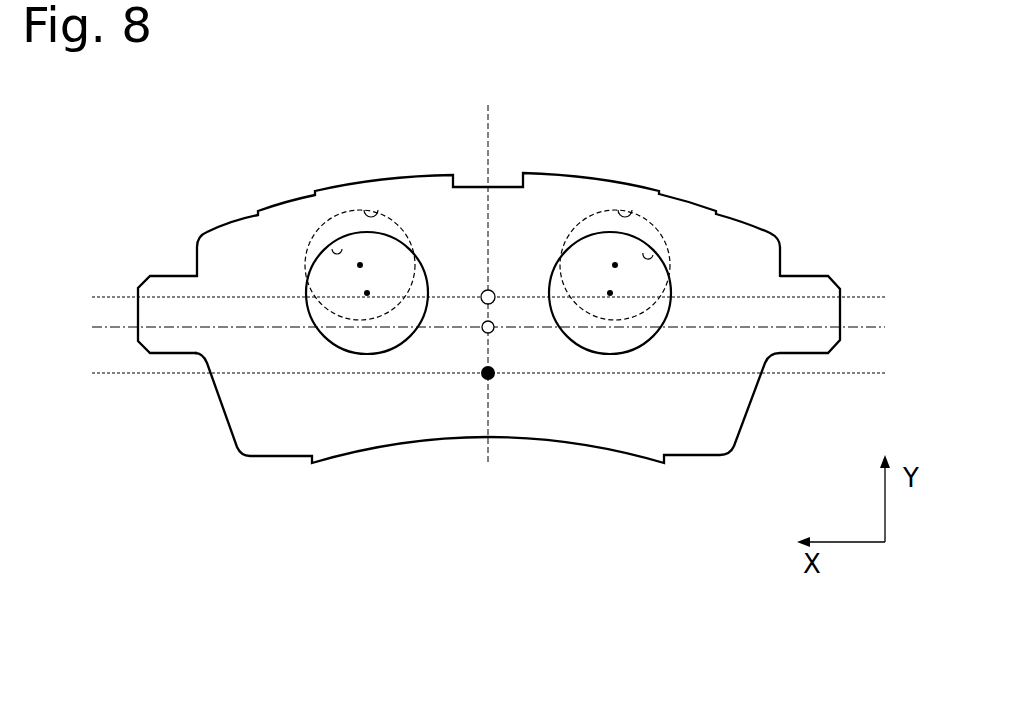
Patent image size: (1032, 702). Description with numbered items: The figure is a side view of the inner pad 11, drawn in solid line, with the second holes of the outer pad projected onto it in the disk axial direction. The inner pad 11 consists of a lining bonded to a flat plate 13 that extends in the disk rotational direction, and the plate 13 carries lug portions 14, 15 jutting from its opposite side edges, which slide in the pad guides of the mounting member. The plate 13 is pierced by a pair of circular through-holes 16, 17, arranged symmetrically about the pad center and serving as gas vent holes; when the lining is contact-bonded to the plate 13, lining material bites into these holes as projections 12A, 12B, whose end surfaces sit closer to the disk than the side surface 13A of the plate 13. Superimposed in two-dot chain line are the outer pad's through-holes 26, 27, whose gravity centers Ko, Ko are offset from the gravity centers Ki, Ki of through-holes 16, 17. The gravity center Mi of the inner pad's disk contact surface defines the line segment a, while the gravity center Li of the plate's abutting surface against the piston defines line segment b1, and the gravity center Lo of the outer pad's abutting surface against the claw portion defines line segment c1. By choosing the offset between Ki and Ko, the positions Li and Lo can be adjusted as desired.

The inner pad 11 is at (752, 205).
The projection of the lining 12A is at (377, 344).
The projection of the lining 12B is at (593, 344).
The plate 13 is at (288, 418).
The side surface of the plate 13A is at (658, 413).
The lug portion 14 is at (810, 288).
The lug portion 15 is at (165, 290).
The through-hole 16 is at (651, 250).
The through-hole 17 is at (340, 249).
The through-hole 26 is at (618, 209).
The through-hole 27 is at (378, 208).
The gravity center of the second hole Ko is at (362, 263).
The gravity center of the first hole Ki is at (369, 291).
The gravity center position of the contact area between the outer pad and the claw p Lo is at (496, 296).
The gravity center position of the disk contact surface of the inner pad Mi is at (482, 328).
The gravity center position of the contact area between the inner pad and the piston Li is at (492, 378).
The line segment c1- c1 is at (493, 296).
The line segment a- a is at (493, 326).
The line segment b1- b1 is at (494, 374).